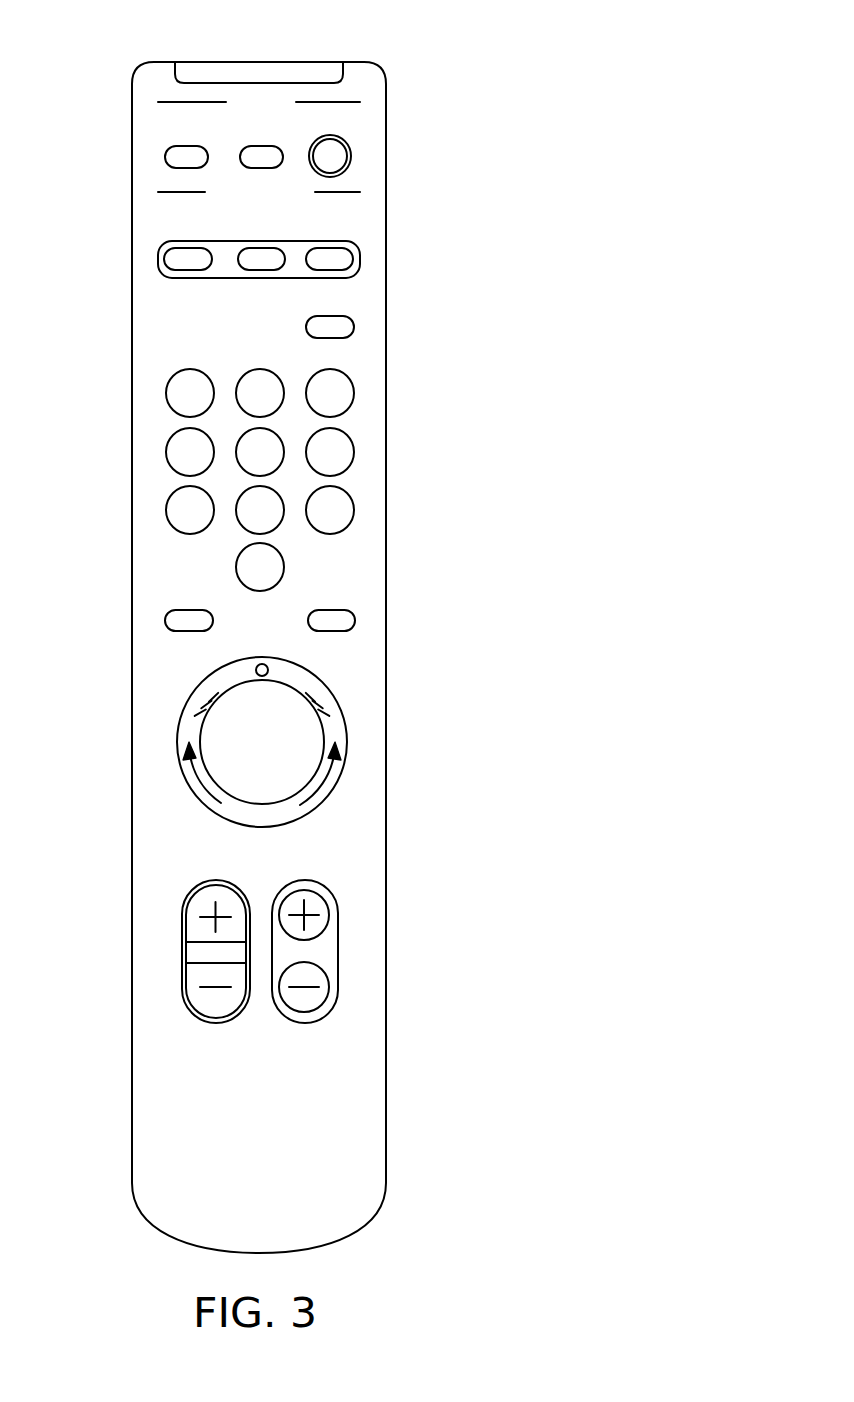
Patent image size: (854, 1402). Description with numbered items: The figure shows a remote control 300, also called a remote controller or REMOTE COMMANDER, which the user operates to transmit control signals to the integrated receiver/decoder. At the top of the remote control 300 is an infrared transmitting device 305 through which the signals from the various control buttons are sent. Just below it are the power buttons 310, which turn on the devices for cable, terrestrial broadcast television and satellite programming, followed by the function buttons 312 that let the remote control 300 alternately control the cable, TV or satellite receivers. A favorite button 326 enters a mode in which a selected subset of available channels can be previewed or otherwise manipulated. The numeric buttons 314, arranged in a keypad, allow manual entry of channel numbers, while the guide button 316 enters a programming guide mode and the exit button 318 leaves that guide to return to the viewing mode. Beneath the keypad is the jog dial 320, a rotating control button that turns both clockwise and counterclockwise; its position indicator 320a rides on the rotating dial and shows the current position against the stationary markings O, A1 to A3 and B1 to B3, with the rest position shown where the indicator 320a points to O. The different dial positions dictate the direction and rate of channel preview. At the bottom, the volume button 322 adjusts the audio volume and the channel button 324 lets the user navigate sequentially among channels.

The remote control 300 is at (533, 32).
The infrared transmitting device 305 is at (320, 68).
The power buttons 310 is at (358, 152).
The function buttons 312 is at (360, 259).
The numeric buttons 314 is at (390, 373).
The guide button 316 is at (355, 620).
The exit button 318 is at (165, 620).
The jog dial 320 is at (330, 787).
The position indicator 320a is at (262, 676).
The volume button 322 is at (188, 955).
The channel button 324 is at (323, 957).
The favorite button 326 is at (354, 326).